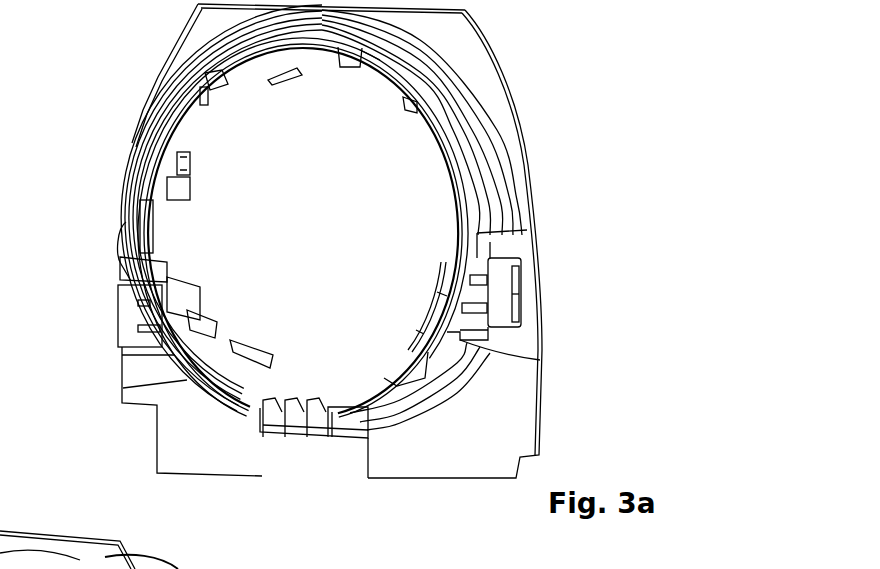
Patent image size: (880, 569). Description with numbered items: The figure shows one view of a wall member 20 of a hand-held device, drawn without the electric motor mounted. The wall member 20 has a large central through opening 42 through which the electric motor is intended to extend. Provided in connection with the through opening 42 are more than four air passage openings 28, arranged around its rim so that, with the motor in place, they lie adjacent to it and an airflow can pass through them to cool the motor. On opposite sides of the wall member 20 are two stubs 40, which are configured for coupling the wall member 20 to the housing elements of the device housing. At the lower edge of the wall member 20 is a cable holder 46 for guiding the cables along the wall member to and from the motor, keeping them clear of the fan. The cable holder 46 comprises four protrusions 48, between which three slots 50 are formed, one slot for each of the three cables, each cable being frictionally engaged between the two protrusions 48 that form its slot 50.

The wall member 20 is at (467, 52).
The air passage opening 28 is at (173, 320).
The stub 40 is at (127, 322).
The through opening 42 is at (334, 247).
The cable holder 46 is at (350, 462).
The protrusion 48 is at (332, 437).
The slot 50 is at (318, 392).